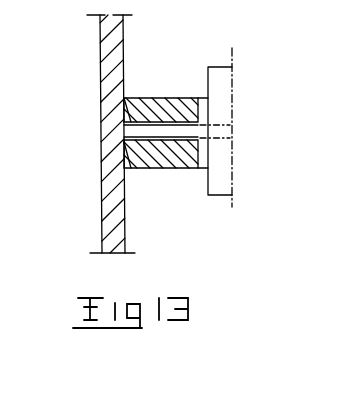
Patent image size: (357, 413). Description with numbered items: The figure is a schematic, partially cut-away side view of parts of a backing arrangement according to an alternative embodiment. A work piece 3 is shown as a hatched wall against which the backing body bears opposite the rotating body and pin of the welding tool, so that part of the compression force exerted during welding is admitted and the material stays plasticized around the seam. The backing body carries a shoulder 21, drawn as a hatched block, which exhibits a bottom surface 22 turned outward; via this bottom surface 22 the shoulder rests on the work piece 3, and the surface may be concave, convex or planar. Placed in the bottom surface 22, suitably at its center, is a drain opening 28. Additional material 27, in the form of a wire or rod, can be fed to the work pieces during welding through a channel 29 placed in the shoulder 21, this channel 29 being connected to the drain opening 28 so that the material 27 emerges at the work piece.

The work piece 3 is at (103, 38).
The shoulder 21 is at (140, 97).
The channel 29 is at (177, 100).
The additional material 27 is at (159, 133).
The drain opening 28 is at (126, 123).
The bottom surface 22 is at (123, 145).